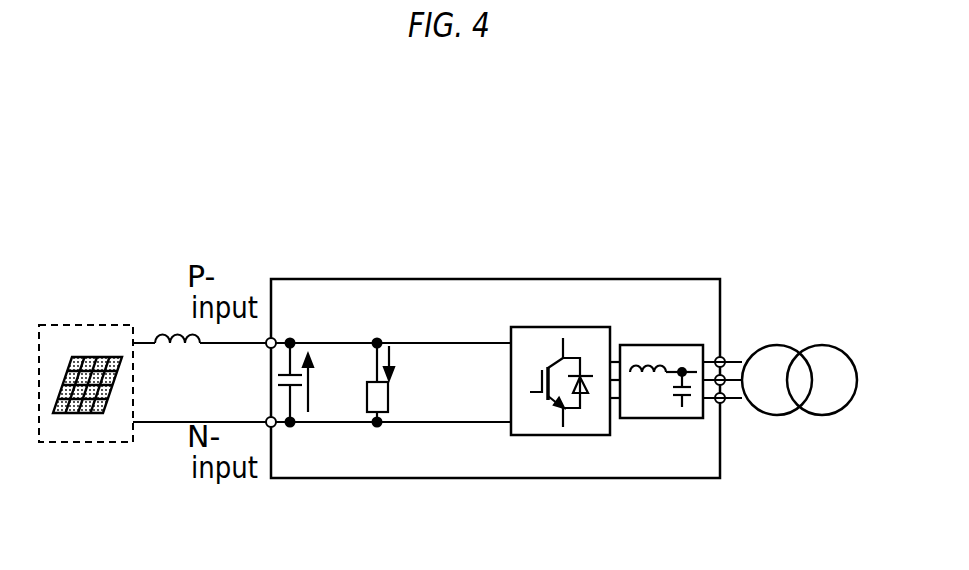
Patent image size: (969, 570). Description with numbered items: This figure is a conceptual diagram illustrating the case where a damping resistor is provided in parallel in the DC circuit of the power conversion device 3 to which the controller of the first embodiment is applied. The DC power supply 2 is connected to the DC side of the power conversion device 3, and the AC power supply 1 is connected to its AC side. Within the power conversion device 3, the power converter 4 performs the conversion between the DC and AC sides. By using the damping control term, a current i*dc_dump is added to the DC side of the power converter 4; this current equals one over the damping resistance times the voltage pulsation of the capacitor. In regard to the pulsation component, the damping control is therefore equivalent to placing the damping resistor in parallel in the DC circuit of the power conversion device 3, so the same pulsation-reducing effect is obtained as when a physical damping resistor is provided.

The AC power supply 1 is at (803, 342).
The DC power supply 2 is at (82, 325).
The power conversion device 3 is at (504, 323).
The power converter 4 is at (560, 325).